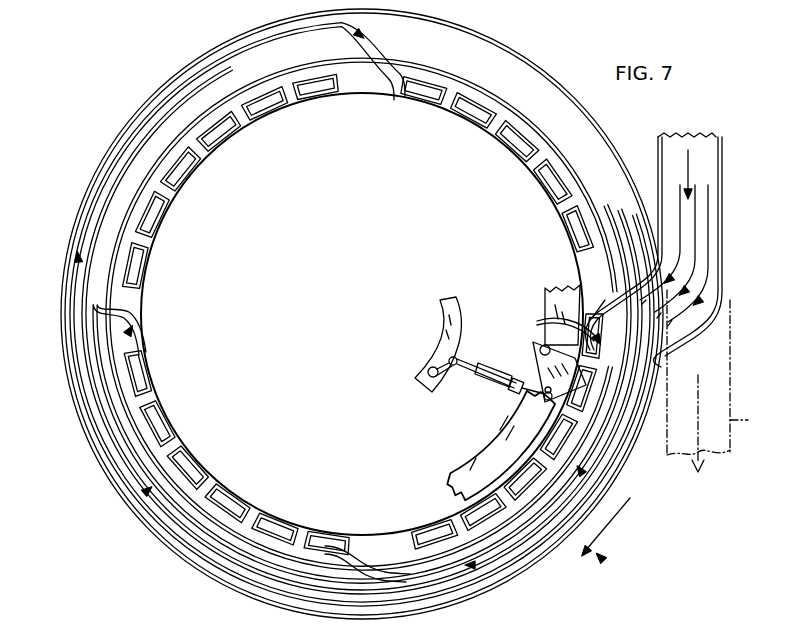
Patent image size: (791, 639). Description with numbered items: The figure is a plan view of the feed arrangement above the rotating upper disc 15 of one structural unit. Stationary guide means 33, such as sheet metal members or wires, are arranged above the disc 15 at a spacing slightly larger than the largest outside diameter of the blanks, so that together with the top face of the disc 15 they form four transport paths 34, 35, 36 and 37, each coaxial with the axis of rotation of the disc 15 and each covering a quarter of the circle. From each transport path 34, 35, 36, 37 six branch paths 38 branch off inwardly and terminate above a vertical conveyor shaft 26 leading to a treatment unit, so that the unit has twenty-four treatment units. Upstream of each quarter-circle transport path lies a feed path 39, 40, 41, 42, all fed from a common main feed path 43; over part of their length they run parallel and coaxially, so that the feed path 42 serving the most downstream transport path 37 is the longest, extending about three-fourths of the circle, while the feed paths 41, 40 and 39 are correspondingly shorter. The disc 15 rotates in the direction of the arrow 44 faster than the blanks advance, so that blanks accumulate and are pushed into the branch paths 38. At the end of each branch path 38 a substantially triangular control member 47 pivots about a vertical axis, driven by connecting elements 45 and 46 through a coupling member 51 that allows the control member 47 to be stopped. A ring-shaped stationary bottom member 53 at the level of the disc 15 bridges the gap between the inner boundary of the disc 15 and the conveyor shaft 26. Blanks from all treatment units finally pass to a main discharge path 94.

The upper disc 15 is at (498, 54).
The vertical conveyor shaft 26 is at (543, 317).
The stationary guide means 33 is at (253, 100).
The transport path 34 is at (528, 498).
The transport path 35 is at (253, 527).
The transport path 36 is at (197, 133).
The transport path 37 is at (447, 82).
The branch path 38 is at (290, 98).
The feed path 39 is at (642, 282).
The feed path 40 is at (667, 287).
The feed path 41 is at (670, 300).
The feed path 42 is at (672, 315).
The main feed path 43 is at (712, 162).
The direction of transportation movement 44 is at (620, 513).
The connecting element 45 is at (443, 363).
The connecting element 46 is at (467, 380).
The control member 47 is at (540, 372).
The coupling member 51 is at (507, 383).
The stationary bottom member 53 is at (548, 290).
The main discharge path 94 is at (732, 418).